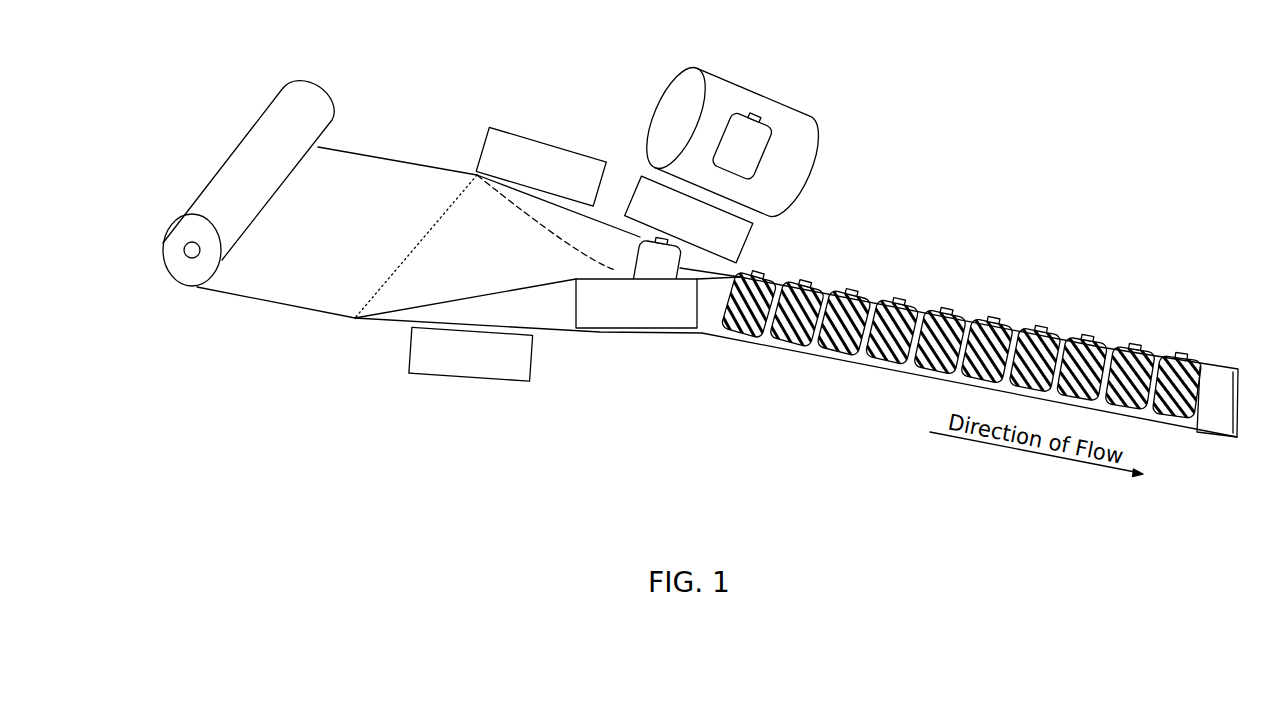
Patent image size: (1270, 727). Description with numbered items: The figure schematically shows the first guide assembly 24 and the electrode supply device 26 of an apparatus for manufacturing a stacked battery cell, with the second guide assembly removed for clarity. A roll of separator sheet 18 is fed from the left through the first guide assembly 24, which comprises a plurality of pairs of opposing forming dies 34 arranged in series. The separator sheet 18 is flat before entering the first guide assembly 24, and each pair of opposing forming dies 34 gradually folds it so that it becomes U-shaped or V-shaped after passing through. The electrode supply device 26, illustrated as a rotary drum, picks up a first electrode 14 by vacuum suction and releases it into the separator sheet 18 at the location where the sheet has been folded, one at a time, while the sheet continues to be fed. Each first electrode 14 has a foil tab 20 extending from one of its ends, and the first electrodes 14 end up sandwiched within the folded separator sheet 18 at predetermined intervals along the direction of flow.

The first electrode 14 is at (770, 154).
The separator sheet 18 is at (297, 80).
The foil tab 20 is at (656, 240).
The first guide assembly 24 is at (421, 402).
The electrode supply device 26 is at (794, 106).
The forming die 34 is at (494, 386).